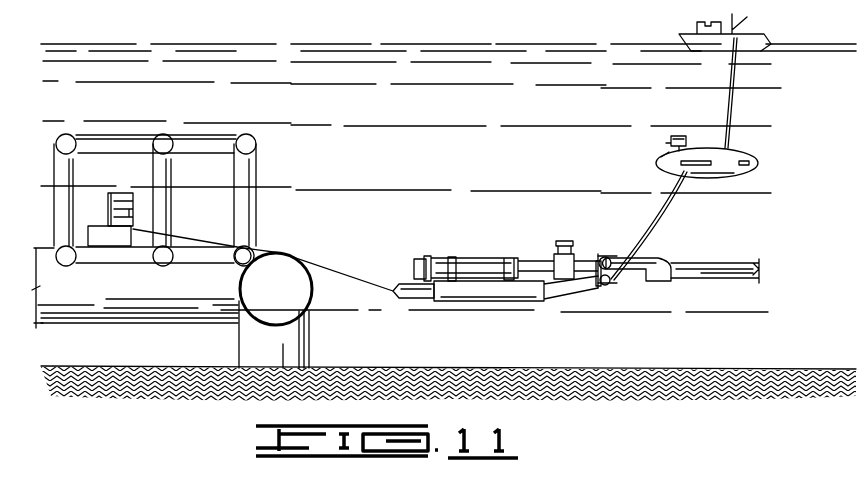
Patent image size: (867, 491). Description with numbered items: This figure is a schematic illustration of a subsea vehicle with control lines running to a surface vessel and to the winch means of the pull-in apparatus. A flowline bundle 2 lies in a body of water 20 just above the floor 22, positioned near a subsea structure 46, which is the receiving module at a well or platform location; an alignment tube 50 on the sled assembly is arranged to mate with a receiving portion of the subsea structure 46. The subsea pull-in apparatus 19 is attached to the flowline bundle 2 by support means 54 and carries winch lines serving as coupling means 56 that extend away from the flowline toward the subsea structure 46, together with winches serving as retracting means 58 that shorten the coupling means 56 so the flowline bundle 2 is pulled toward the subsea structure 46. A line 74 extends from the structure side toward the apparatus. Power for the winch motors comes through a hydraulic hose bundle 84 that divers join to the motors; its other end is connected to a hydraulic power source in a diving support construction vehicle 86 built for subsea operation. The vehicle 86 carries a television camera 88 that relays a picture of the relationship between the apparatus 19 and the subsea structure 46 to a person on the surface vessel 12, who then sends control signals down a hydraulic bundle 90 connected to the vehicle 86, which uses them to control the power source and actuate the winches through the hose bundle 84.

The flowline bundle 2 is at (707, 262).
The trailing vessel 12 is at (701, 44).
The subsea pull-in apparatus 19 is at (612, 250).
The body of water 20 is at (543, 72).
The floor of the body of water 22 is at (408, 368).
The subsea structure 46 is at (270, 160).
The alignment tube 50 is at (410, 298).
The support means 54 is at (629, 252).
The coupling means 56 is at (563, 292).
The retracting means 58 is at (603, 292).
The cable 74 is at (333, 266).
The hydraulic hose bundle 84 is at (668, 208).
The diving support construction vehicle 86 is at (733, 148).
The television camera 88 is at (677, 131).
The hydraulic bundle 90 is at (727, 98).